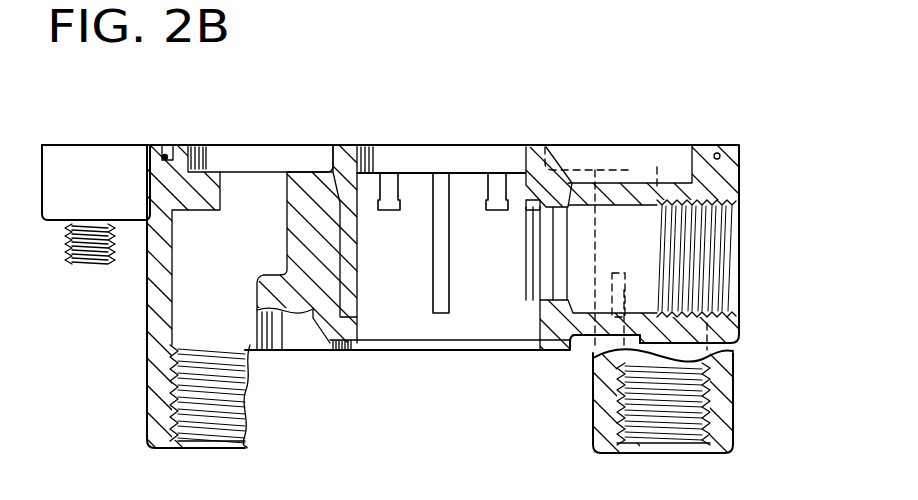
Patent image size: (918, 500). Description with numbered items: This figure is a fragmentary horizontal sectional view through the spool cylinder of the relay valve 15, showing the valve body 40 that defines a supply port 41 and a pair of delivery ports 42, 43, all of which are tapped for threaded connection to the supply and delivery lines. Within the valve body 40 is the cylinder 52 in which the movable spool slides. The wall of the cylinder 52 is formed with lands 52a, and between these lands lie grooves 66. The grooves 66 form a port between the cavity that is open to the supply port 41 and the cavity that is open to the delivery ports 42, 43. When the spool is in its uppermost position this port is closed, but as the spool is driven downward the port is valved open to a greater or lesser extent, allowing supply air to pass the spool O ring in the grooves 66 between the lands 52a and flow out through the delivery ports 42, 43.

The relay valve 15 is at (140, 352).
The valve body 40 is at (104, 110).
The supply port 41 is at (700, 262).
The delivery port 42 is at (673, 427).
The delivery port 43 is at (210, 413).
The cylinder 52 is at (464, 154).
The lands 52a is at (379, 210).
The grooves 66 is at (527, 205).